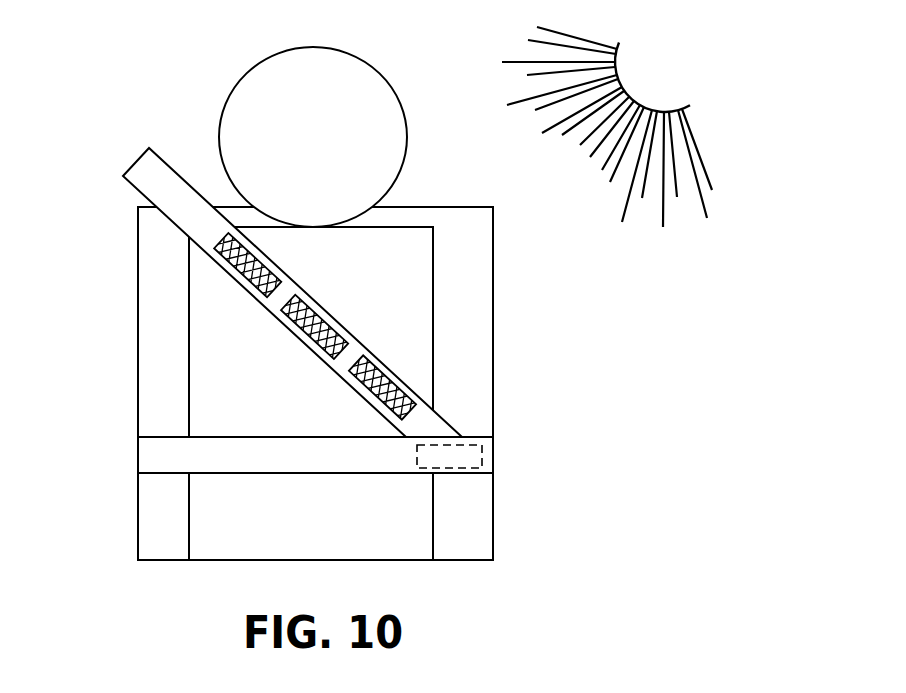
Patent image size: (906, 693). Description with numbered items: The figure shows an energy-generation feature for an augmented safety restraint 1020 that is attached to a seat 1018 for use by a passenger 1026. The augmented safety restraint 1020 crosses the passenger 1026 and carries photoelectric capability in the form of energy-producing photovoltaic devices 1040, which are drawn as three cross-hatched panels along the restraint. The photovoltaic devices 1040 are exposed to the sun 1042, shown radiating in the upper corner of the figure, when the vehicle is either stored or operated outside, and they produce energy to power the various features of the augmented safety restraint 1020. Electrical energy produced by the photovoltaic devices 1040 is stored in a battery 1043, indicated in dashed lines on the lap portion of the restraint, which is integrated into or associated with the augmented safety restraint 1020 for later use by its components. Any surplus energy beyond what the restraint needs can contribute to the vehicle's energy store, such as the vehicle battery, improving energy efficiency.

The seat 1018 is at (138, 327).
The augmented safety restraint 1020 is at (137, 161).
The passenger 1026 is at (433, 300).
The photovoltaic devices 1040 is at (265, 266).
The sun 1042 is at (698, 149).
The battery 1043 is at (482, 460).